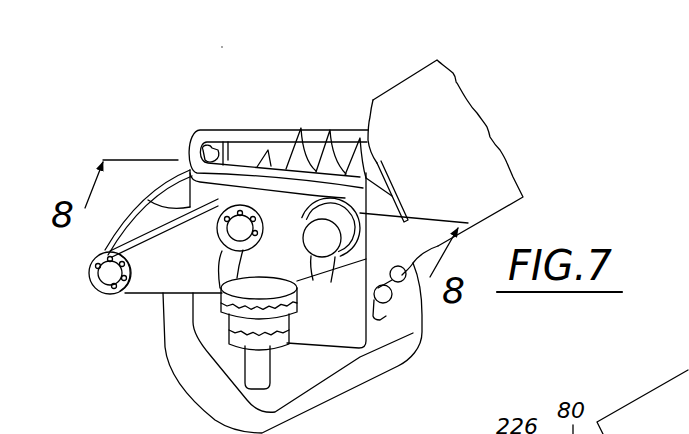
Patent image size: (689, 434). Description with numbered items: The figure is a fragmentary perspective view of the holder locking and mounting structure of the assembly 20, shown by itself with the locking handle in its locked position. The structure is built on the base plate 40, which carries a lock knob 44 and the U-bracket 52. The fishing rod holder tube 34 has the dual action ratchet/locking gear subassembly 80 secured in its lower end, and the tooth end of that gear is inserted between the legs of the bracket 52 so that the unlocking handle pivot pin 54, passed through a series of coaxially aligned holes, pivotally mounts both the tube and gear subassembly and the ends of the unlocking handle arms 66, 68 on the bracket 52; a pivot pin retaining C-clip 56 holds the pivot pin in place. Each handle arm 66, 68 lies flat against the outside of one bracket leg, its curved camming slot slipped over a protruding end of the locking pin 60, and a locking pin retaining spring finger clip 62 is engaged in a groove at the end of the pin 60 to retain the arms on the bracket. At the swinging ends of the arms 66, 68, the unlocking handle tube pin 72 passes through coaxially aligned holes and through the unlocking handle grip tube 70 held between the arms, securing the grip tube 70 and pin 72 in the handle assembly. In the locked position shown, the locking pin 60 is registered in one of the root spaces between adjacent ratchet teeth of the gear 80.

The tool assembly 20 is at (222, 46).
The fishing rod holder tube 34 is at (480, 98).
The base plate 40 is at (352, 392).
The lock knob 44 is at (238, 342).
The U-bracket 52 is at (249, 127).
The unlocking handle pivot pin 54 is at (325, 250).
The pivot pin retaining C-clip 56 is at (352, 204).
The locking pin 60 is at (226, 233).
The locking pin retaining spring finger clip 62 is at (270, 234).
The unlocking handle arm 66 is at (156, 295).
The unlocking handle arm 68 is at (166, 173).
The unlocking handle grip tube 70 is at (126, 216).
The unlocking handle tube pin 72 is at (107, 276).
The dual action ratchet/locking gear subassembly 80 is at (403, 240).